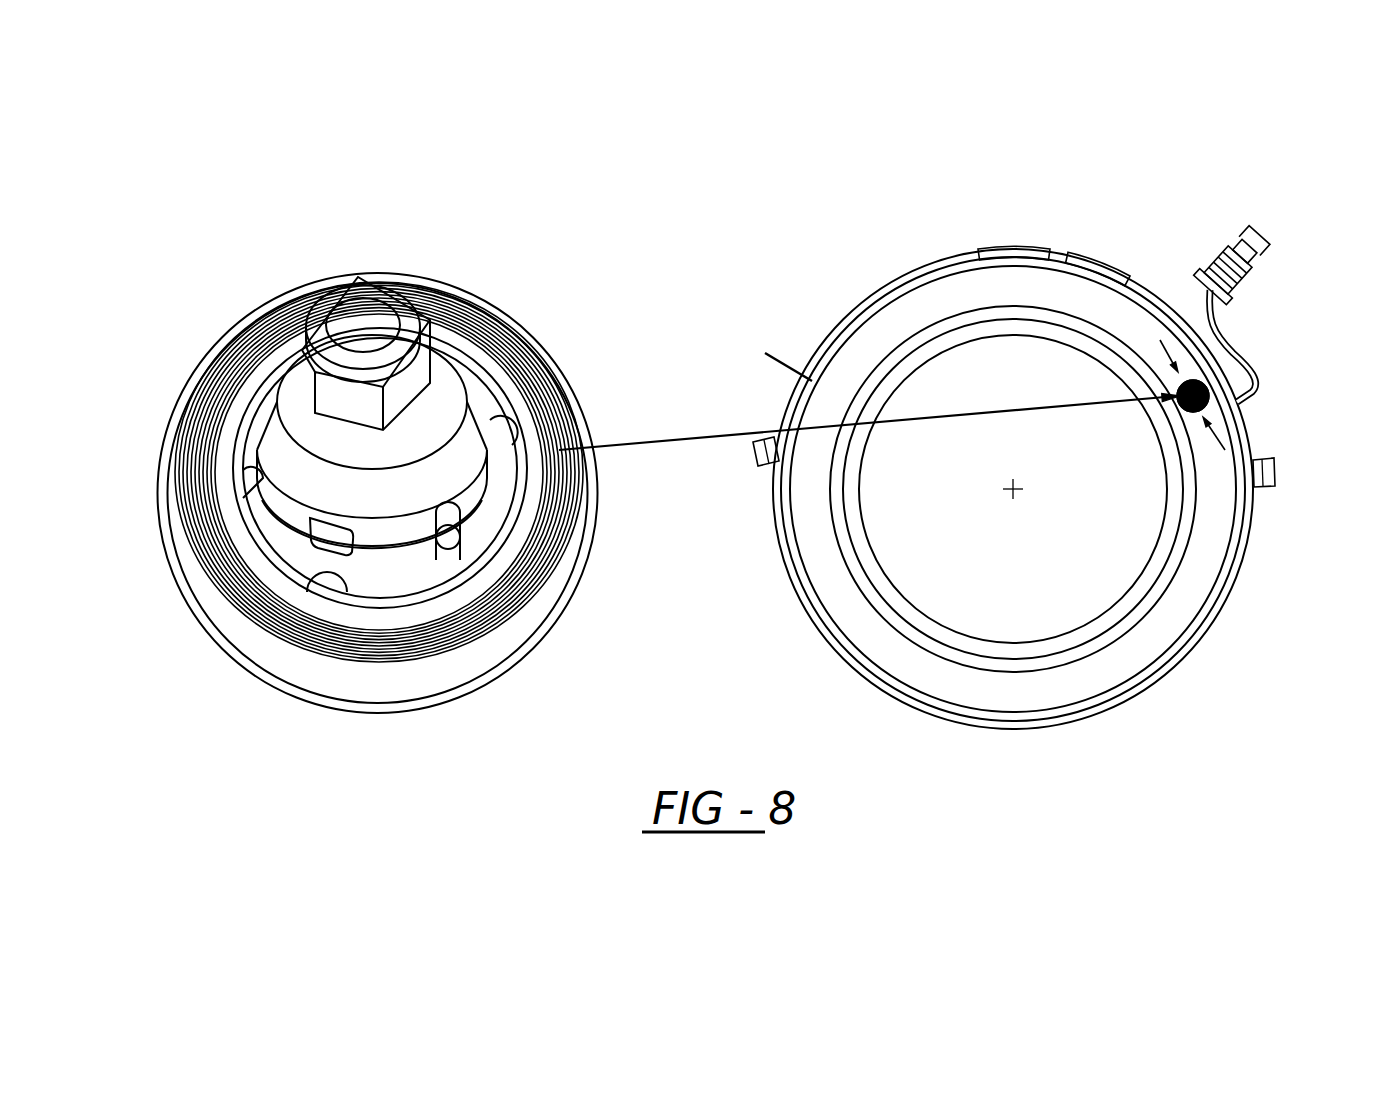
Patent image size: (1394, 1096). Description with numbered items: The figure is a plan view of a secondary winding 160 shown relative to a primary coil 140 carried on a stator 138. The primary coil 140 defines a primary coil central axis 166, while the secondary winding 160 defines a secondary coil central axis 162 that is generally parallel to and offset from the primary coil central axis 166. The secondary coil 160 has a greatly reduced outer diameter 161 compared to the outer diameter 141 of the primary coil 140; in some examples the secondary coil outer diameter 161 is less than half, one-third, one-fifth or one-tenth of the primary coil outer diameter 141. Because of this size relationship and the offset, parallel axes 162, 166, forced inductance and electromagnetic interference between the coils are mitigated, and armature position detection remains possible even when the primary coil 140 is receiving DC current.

The stator 138 is at (905, 277).
The primary coil 140 is at (976, 290).
The outer diameter of the primary coil 141 is at (1212, 598).
The secondary winding 160 is at (559, 450).
The outer diameter of the secondary coil 161 is at (1220, 432).
The secondary coil central axis 162 is at (1190, 382).
The primary coil central axis 166 is at (1013, 490).